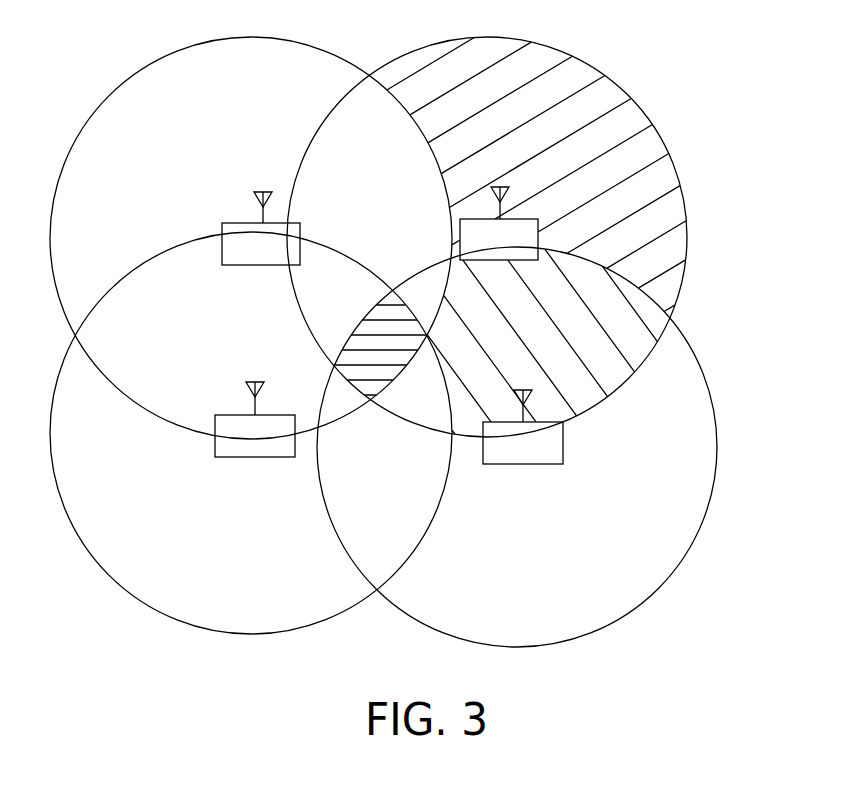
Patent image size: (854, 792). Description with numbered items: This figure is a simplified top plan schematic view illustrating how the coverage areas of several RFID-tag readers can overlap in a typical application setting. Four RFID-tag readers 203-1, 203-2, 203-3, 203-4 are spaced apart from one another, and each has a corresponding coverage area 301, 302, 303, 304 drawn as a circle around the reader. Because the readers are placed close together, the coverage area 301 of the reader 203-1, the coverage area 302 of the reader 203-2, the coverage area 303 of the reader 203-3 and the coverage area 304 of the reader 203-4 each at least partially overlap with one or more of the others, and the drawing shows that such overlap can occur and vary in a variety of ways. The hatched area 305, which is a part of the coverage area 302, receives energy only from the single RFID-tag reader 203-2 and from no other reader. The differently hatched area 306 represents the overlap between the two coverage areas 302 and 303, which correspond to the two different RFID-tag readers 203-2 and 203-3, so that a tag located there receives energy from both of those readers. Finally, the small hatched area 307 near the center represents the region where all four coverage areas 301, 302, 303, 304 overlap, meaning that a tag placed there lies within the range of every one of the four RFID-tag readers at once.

The coverage area 301 is at (112, 108).
The coverage area 302 is at (605, 92).
The coverage area 303 is at (693, 390).
The coverage area 304 is at (300, 610).
The area receiving energy from one reader only 305 is at (657, 172).
The overlap area of two coverage areas 306 is at (617, 317).
The overlap area of all four coverage areas 307 is at (371, 355).
The RFID-tag reader 203-1 is at (233, 248).
The RFID-tag reader 203-2 is at (473, 232).
The RFID-tag reader 203-3 is at (530, 458).
The RFID-tag reader 203-4 is at (248, 452).